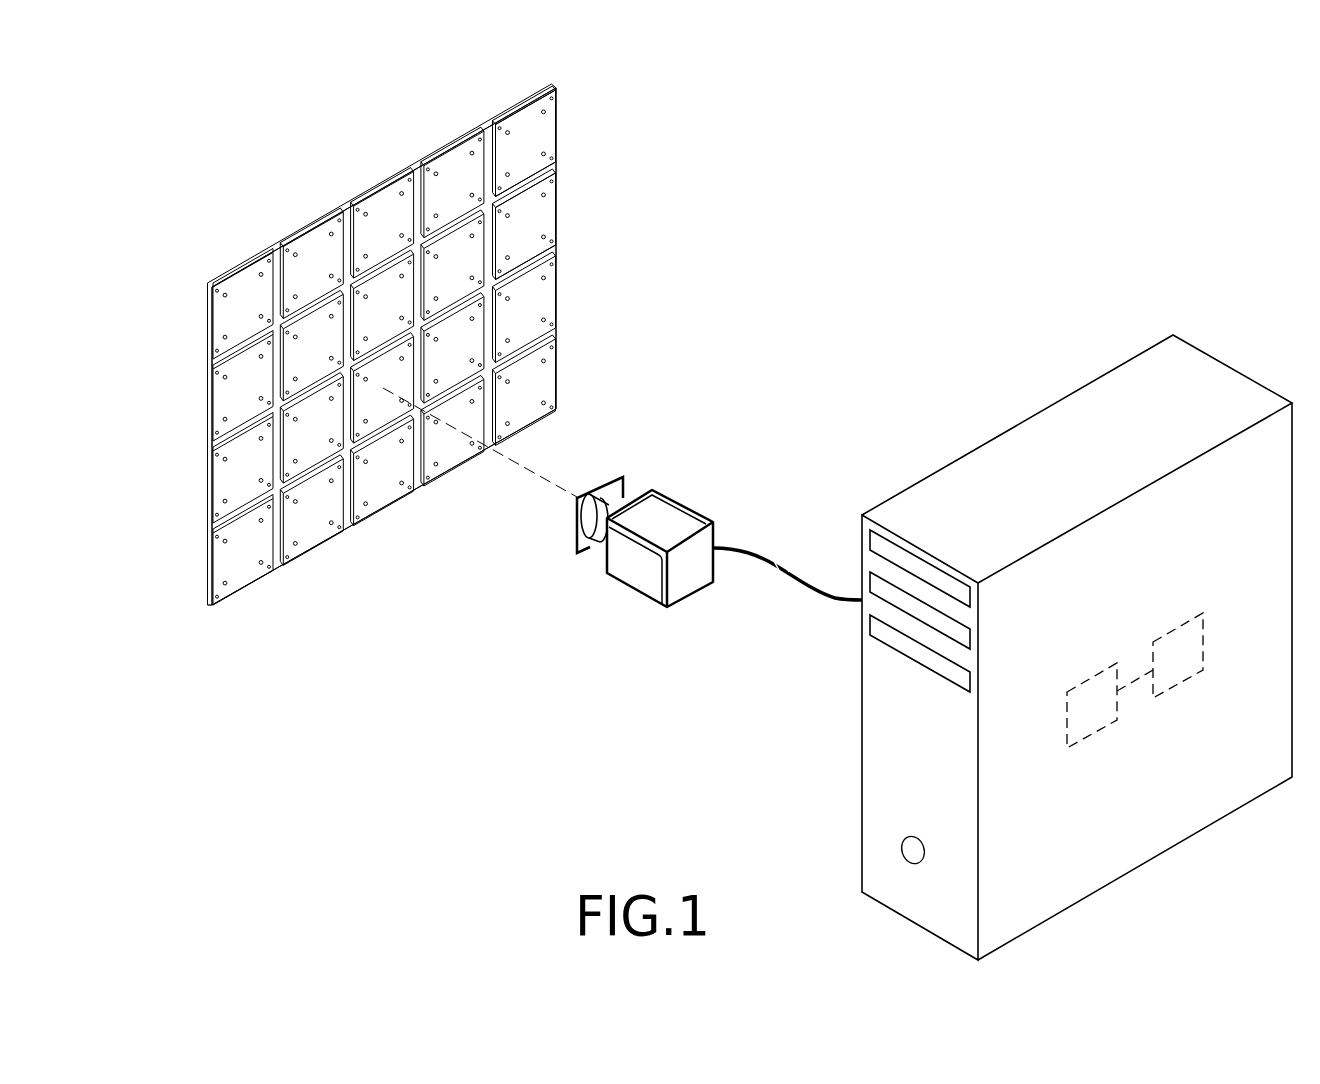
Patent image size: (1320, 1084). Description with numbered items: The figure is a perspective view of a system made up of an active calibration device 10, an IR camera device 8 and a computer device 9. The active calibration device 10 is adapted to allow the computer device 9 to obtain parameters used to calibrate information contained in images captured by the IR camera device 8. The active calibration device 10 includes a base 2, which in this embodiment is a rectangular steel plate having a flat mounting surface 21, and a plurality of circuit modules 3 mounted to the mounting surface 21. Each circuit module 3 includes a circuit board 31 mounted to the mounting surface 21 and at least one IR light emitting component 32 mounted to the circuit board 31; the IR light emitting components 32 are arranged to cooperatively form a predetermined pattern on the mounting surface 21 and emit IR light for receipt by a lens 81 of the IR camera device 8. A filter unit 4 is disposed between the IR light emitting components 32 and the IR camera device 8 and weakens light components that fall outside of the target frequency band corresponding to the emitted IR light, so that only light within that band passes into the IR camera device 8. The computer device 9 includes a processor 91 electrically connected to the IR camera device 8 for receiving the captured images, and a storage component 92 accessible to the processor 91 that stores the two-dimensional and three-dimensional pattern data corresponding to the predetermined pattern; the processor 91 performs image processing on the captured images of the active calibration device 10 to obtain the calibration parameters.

The active calibration device 10 is at (156, 145).
The base 2 is at (263, 234).
The mounting surface 21 is at (273, 290).
The circuit module 3 is at (570, 117).
The circuit board 31 is at (523, 128).
The IR light emitting component 32 is at (366, 214).
The filter unit 4 is at (634, 454).
The IR camera device 8 is at (700, 480).
The lens 81 is at (590, 523).
The computer device 9 is at (1258, 356).
The processor 91 is at (1103, 730).
The storage component 92 is at (1188, 680).